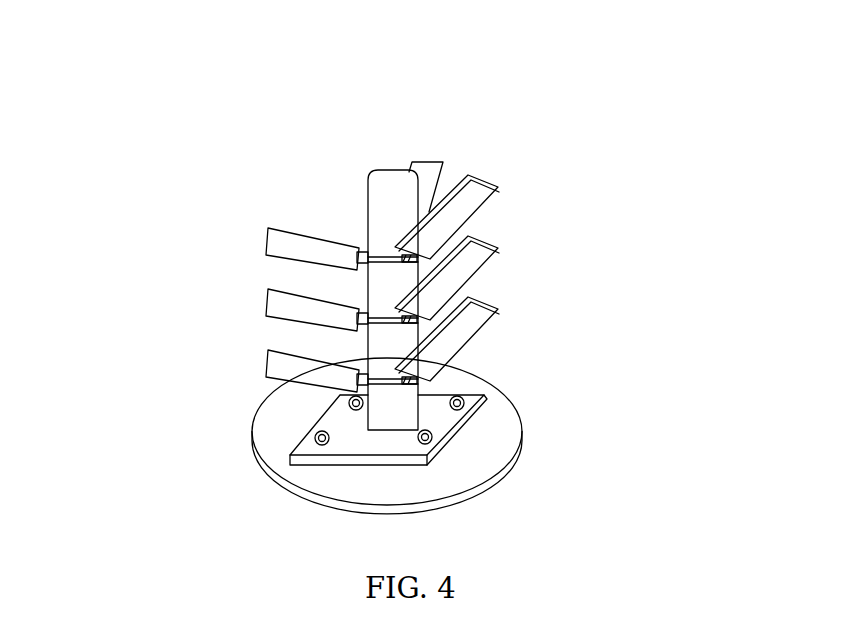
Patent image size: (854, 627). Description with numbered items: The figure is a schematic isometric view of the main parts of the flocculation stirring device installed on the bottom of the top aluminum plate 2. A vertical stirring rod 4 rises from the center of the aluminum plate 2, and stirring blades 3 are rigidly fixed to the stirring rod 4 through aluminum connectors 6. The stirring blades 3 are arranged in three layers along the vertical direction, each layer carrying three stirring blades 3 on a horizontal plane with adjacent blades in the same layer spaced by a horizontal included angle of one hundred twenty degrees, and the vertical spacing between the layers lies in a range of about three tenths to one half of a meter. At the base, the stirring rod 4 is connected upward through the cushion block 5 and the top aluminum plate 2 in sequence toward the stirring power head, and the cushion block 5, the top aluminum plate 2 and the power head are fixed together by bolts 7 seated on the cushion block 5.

The aluminum plate 2 is at (268, 477).
The stirring blades 3 is at (495, 197).
The stirring rod 4 is at (393, 170).
The cushion block 5 is at (305, 439).
The aluminum connectors 6 is at (362, 250).
The bolts 7 is at (433, 435).